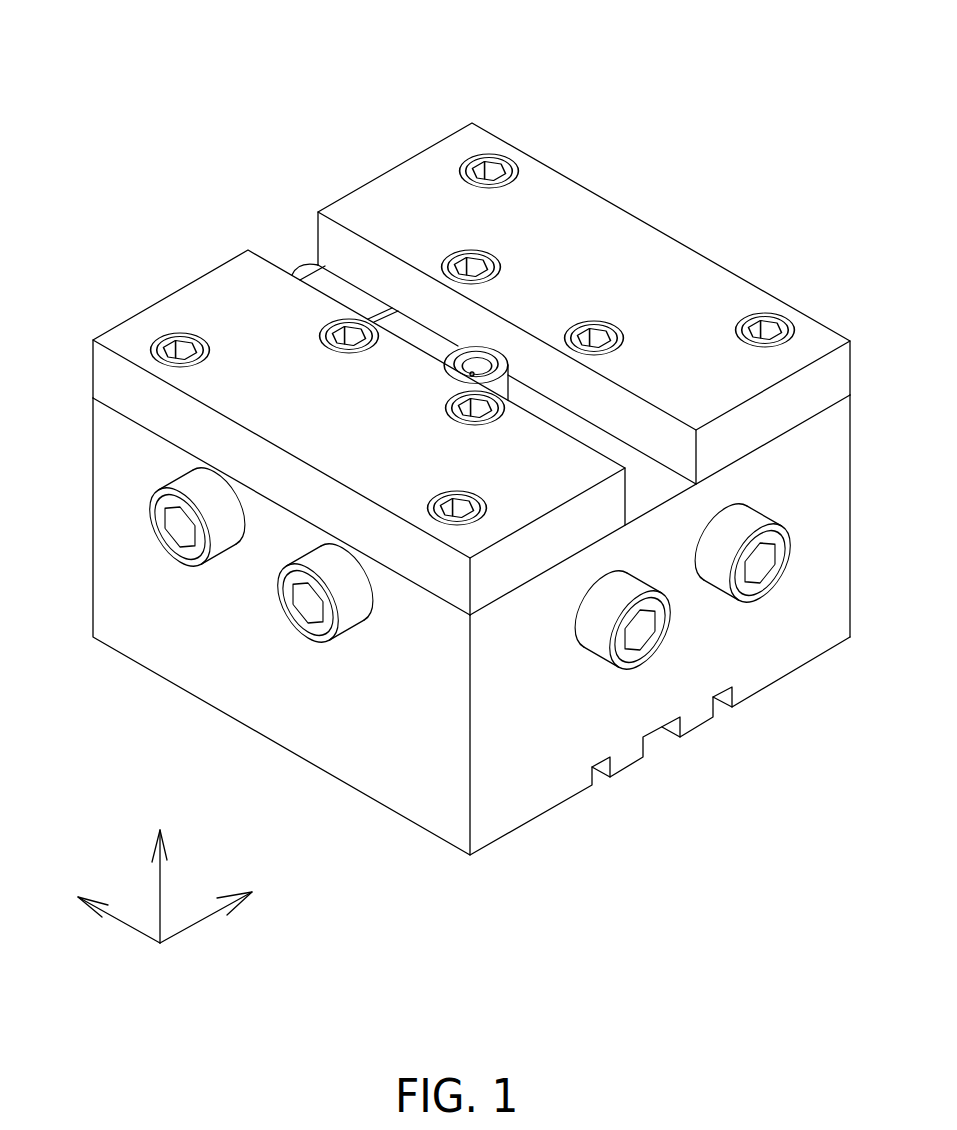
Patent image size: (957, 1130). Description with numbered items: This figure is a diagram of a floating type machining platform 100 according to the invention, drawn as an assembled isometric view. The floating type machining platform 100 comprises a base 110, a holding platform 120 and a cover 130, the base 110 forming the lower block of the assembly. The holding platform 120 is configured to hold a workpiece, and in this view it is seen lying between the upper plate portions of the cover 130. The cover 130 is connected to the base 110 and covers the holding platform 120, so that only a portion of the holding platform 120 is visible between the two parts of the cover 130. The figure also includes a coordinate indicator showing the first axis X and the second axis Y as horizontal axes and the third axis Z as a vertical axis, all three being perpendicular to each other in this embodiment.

The floating type machining platform 100 is at (698, 62).
The base 110 is at (765, 650).
The holding platform 120 is at (414, 332).
The cover 130 is at (363, 167).